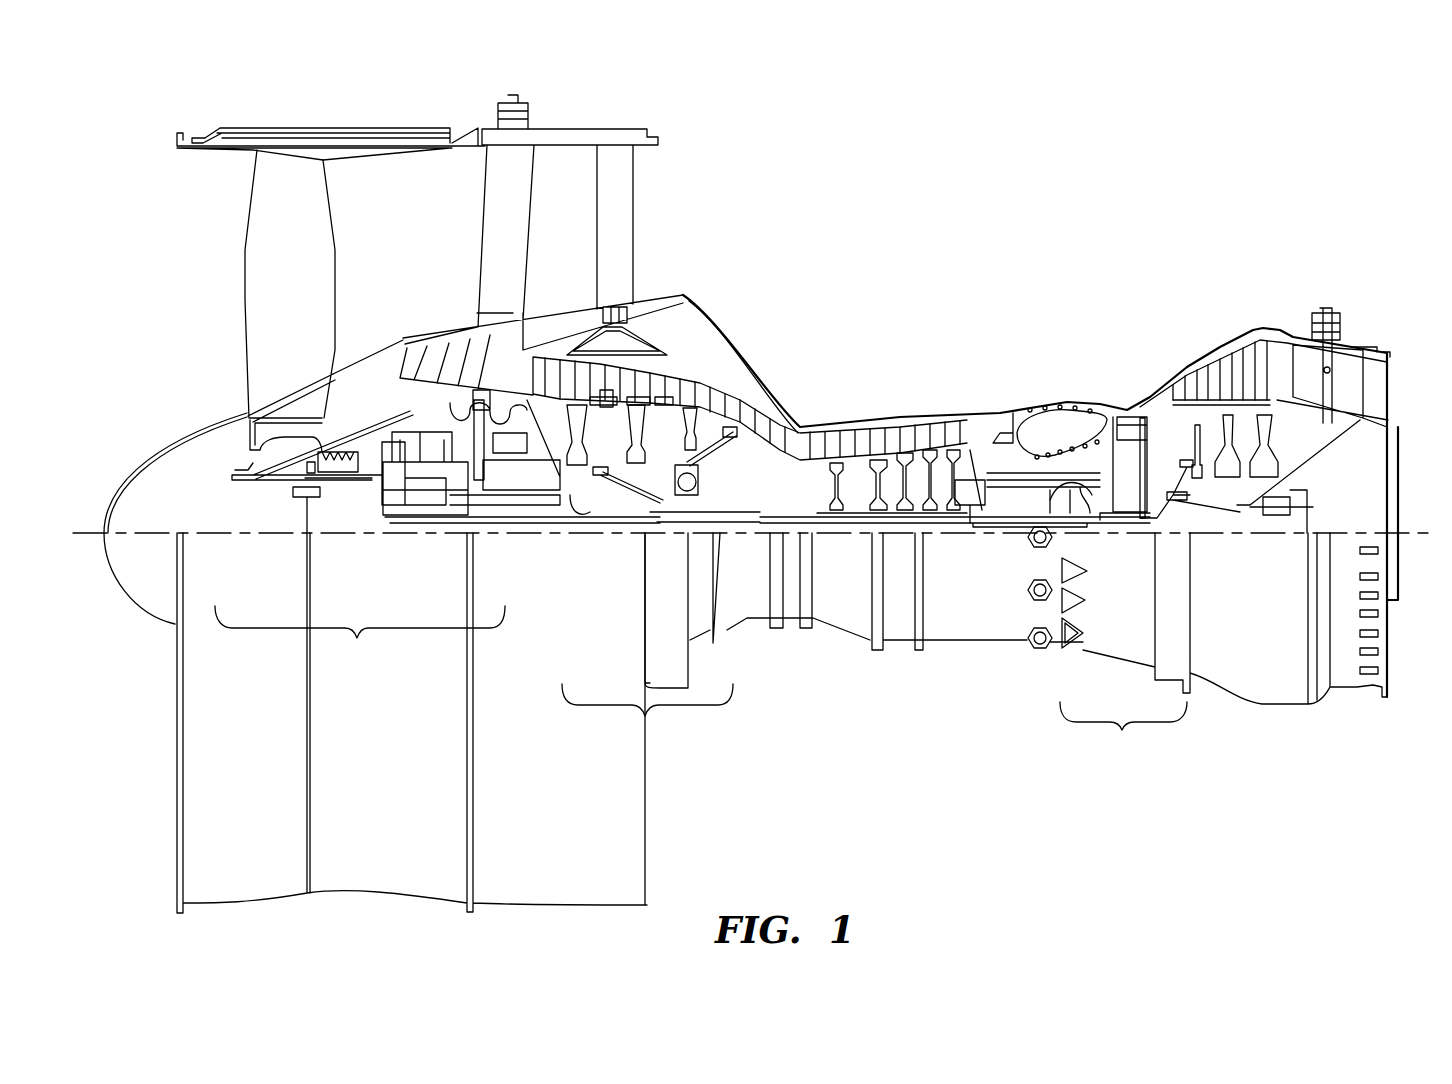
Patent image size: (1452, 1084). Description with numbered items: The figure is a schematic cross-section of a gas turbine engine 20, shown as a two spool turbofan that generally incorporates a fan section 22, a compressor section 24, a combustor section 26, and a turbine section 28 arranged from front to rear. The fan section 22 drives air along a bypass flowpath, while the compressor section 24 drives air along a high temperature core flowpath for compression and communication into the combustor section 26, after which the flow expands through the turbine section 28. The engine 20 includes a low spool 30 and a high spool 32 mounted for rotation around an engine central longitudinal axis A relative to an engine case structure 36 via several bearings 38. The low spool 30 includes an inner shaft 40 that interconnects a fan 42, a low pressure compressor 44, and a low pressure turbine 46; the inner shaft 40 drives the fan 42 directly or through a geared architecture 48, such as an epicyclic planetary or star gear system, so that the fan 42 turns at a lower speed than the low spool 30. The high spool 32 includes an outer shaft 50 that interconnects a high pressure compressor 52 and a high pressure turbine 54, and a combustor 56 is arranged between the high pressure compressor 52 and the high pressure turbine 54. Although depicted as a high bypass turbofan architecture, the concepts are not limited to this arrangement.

The gas turbine engine 20 is at (1112, 189).
The fan section 22 is at (473, 108).
The compressor section 24 is at (935, 280).
The combustor section 26 is at (1062, 280).
The turbine section 28 is at (1327, 280).
The low spool 30 is at (752, 483).
The high spool 32 is at (968, 485).
The engine case structure 36 is at (895, 648).
The bearings 38 is at (701, 687).
The inner shaft 40 is at (1092, 520).
The fan 42 is at (310, 339).
The low pressure compressor 44 is at (663, 384).
The low pressure turbine 46 is at (1237, 362).
The geared architecture 48 is at (427, 483).
The outer shaft 50 is at (1090, 490).
The high pressure compressor 52 is at (890, 486).
The high pressure turbine 54 is at (1125, 413).
The combustor 56 is at (1063, 434).
The engine central longitudinal axis A is at (1420, 533).